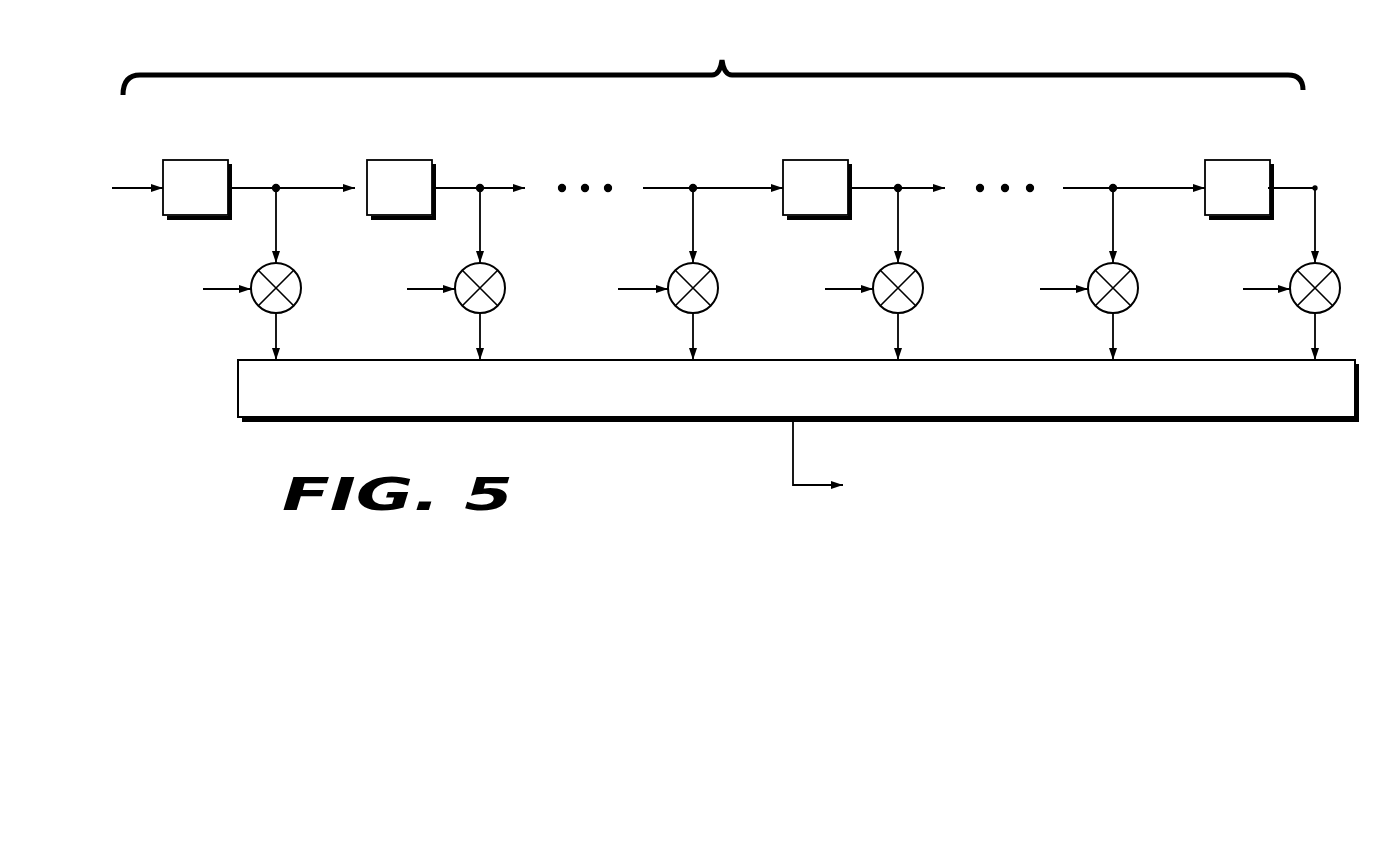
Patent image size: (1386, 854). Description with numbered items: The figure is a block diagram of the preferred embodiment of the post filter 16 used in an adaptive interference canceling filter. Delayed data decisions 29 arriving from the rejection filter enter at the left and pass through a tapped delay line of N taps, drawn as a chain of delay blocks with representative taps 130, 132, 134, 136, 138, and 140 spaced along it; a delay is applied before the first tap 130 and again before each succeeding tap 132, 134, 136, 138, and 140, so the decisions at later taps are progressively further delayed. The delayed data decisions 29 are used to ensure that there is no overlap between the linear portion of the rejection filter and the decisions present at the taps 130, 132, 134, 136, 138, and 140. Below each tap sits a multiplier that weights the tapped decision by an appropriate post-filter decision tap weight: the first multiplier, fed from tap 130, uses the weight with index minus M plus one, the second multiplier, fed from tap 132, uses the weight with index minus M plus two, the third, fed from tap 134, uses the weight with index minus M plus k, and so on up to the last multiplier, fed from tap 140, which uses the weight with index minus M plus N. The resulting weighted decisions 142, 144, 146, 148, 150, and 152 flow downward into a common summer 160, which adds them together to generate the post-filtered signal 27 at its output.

The post filter 16 is at (246, 485).
The delayed data decisions 29 is at (123, 189).
The post-filtered signal 27 is at (838, 459).
The tap 130 is at (276, 186).
The tap 132 is at (480, 186).
The tap 134 is at (693, 186).
The tap 136 is at (898, 186).
The tap 138 is at (1113, 186).
The tap 140 is at (1315, 188).
The weighted decision 142 is at (277, 323).
The weighted decision 144 is at (481, 323).
The weighted decision 146 is at (694, 323).
The weighted decision 148 is at (899, 323).
The weighted decision 150 is at (1114, 323).
The weighted decision 152 is at (1316, 323).
The summer 160 is at (1033, 401).